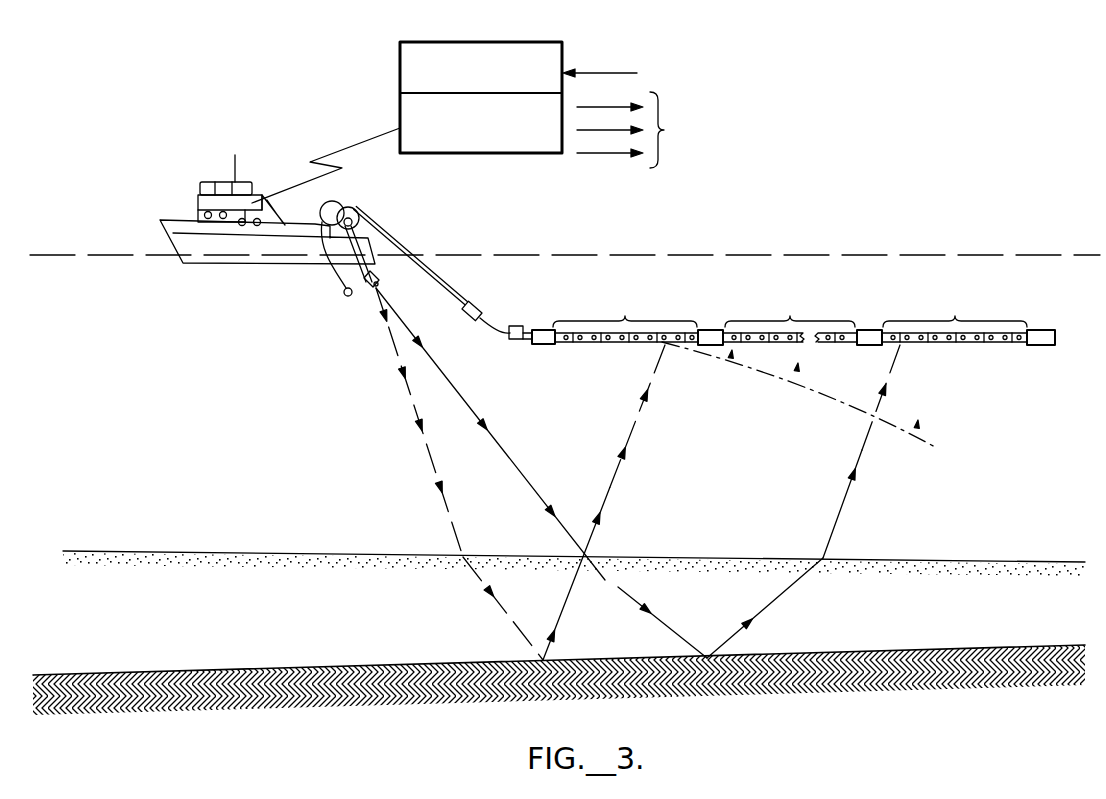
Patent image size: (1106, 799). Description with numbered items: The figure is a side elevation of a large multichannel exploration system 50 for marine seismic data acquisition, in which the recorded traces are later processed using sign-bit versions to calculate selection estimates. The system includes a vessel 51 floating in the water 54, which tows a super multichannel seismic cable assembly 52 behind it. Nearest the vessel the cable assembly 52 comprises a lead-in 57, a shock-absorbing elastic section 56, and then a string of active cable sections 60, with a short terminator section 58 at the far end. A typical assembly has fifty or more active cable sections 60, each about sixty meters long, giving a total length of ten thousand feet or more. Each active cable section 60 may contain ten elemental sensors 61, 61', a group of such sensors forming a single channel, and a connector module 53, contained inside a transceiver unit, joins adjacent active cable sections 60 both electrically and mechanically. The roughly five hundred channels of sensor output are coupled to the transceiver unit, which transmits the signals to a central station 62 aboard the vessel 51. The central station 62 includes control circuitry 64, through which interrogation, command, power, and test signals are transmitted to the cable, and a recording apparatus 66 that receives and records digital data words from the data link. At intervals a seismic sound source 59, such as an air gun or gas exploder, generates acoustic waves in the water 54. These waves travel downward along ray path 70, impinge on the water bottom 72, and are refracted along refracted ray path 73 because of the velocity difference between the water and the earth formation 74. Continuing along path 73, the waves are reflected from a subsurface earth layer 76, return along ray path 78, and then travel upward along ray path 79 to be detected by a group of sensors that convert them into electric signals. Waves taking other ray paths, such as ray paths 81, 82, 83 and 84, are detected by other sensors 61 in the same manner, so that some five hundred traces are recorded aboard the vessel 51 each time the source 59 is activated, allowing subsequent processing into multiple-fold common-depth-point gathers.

The large multichannel exploration system 50 is at (222, 130).
The vessel 51 is at (185, 225).
The seismic cable assembly 52 is at (782, 307).
The connector module 53 is at (712, 330).
The water 54 is at (243, 346).
The shock-absorbing elastic section 56 is at (497, 322).
The lead-in 57 is at (452, 298).
The short terminator section 58 is at (1040, 330).
The seismic sound source 59 is at (366, 290).
The active cable section 60 is at (790, 308).
The elemental sensors 61 is at (703, 355).
The hydrophones 61' is at (956, 361).
The central station 62 is at (591, 104).
The control circuitry 64 is at (460, 145).
The recording apparatus 66 is at (429, 50).
The ray path 70 is at (408, 380).
The water bottom 72 is at (376, 552).
The refracted ray path 73 is at (483, 590).
The earth formation 74 is at (168, 624).
The subsurface earth layer 76 is at (1030, 657).
The ray path 78 is at (575, 615).
The ray path 79 is at (641, 455).
The ray path 81 is at (490, 433).
The ray path 82 is at (653, 608).
The ray path 83 is at (786, 590).
The ray path 84 is at (855, 489).